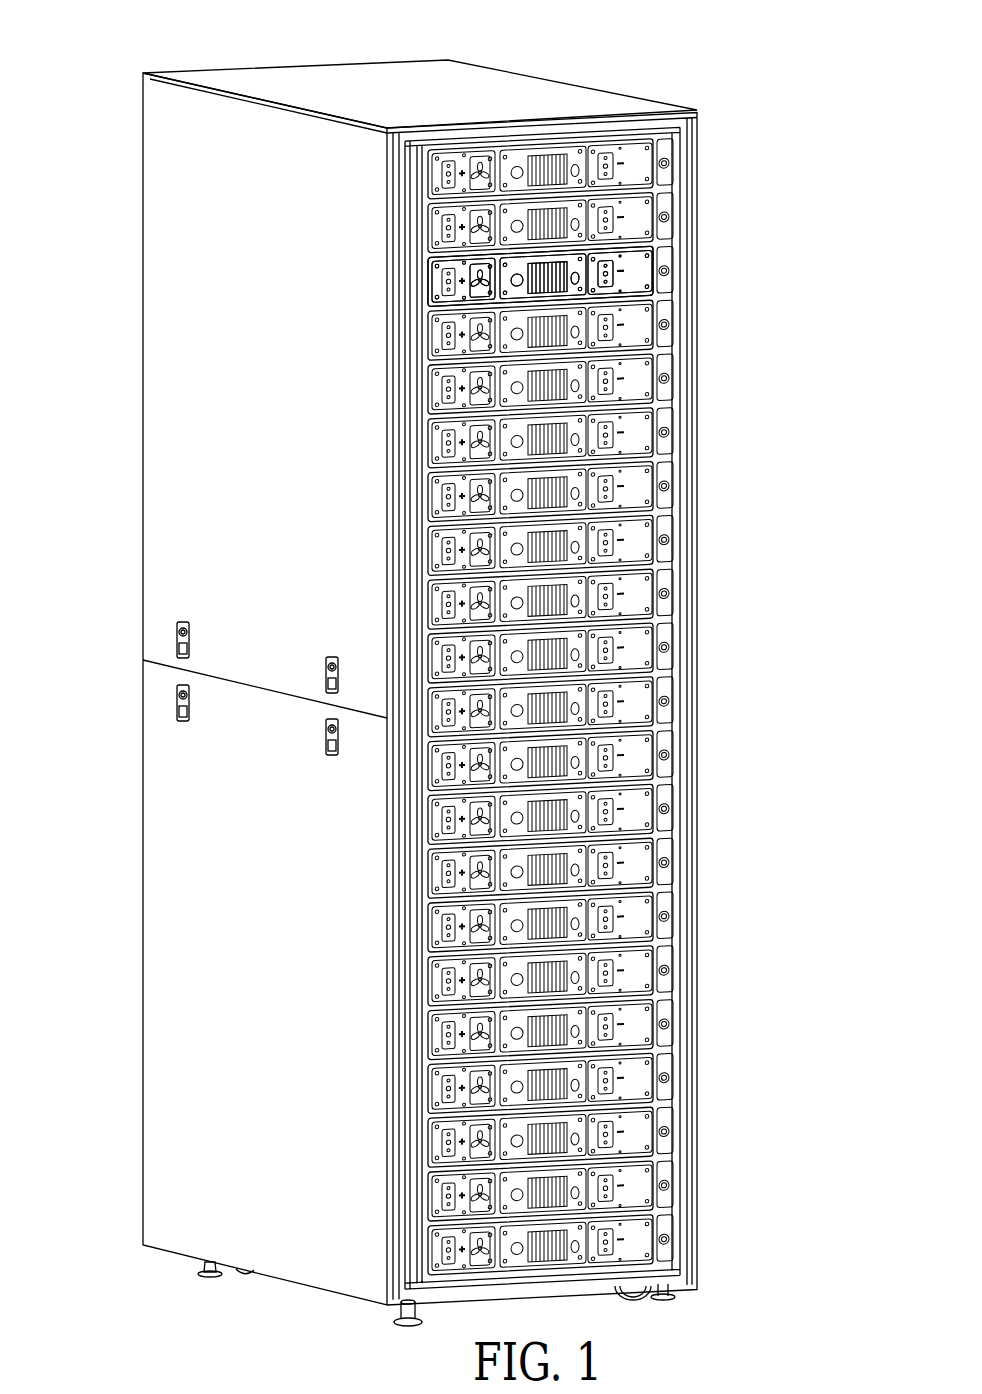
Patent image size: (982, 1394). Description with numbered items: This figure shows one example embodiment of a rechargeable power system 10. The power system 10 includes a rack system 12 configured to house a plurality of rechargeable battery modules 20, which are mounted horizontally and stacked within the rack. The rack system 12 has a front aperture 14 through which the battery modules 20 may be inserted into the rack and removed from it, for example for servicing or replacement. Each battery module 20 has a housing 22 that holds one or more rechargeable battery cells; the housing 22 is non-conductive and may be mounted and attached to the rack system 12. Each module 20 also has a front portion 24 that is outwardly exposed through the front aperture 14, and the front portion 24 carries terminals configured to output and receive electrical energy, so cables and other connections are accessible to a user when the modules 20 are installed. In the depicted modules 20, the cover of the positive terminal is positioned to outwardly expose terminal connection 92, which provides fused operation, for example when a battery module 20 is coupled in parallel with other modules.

The rechargeable power system 10 is at (445, 663).
The rack system 12 is at (141, 343).
The front aperture 14 is at (690, 322).
The rechargeable battery module 20 is at (674, 203).
The housing 22 is at (663, 227).
The front portion 24 is at (638, 262).
The terminal connection 92 is at (448, 497).